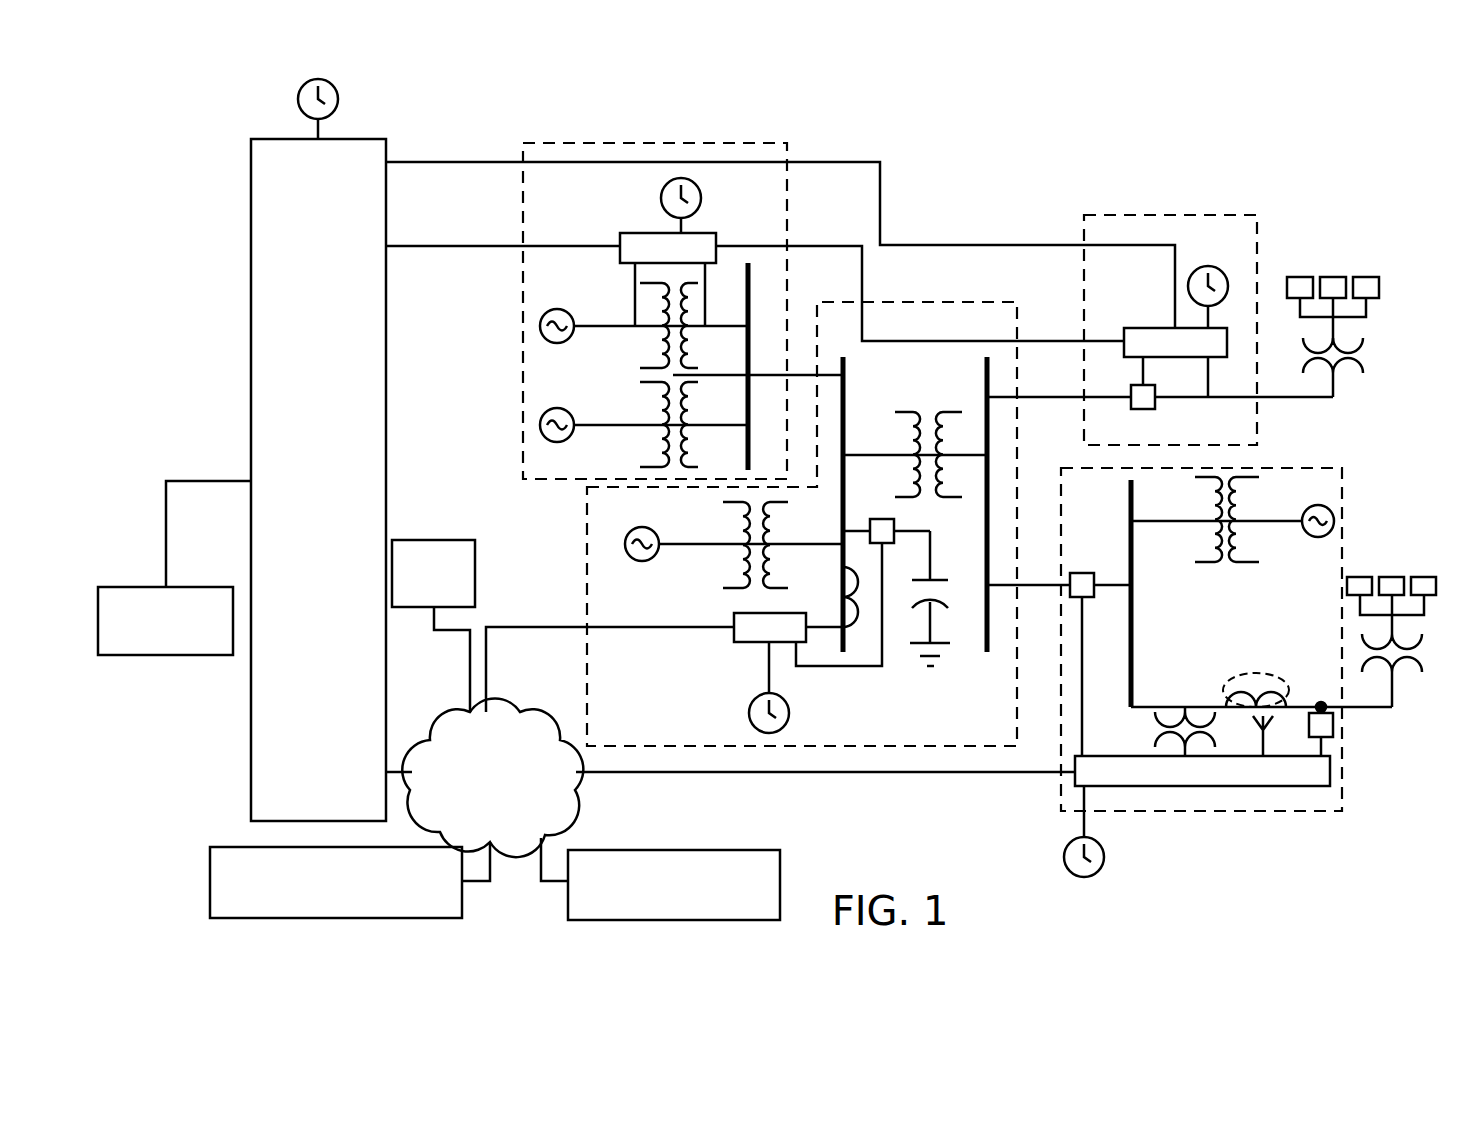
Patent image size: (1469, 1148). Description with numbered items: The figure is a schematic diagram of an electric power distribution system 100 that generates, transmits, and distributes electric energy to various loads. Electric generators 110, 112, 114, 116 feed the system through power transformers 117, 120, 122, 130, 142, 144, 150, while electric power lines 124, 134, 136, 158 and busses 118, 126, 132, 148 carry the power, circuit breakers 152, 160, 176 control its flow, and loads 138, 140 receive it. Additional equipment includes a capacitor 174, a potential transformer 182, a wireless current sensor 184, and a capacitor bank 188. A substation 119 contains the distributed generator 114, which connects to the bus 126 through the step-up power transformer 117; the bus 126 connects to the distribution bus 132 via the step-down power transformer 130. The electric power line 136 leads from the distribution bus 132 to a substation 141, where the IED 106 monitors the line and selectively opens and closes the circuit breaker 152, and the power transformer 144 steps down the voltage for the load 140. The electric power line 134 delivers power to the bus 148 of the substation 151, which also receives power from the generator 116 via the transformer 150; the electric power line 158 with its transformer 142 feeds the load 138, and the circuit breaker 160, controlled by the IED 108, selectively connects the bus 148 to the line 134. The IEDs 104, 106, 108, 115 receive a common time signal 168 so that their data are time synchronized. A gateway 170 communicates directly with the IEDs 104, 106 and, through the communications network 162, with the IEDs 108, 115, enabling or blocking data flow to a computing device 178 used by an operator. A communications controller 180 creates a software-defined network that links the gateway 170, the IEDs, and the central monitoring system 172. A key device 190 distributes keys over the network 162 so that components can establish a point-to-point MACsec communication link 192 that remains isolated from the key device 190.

The electric power distribution system 100 is at (1343, 131).
The IED 104 is at (661, 232).
The IED 106 is at (1138, 328).
The IED 108 is at (1255, 787).
The electric generator 110 is at (560, 309).
The electric generator 112 is at (560, 408).
The electric generator 114 is at (650, 527).
The IED 115 is at (775, 613).
The electric generator 116 is at (1311, 537).
The power transformer 117 is at (743, 575).
The bus 118 is at (751, 290).
The substation 119 is at (587, 575).
The power transformer 120 is at (660, 362).
The power transformer 122 is at (660, 458).
The electric power line 124 is at (802, 372).
The bus 126 is at (847, 383).
The power transformer 130 is at (928, 412).
The distribution bus 132 is at (985, 640).
The electric power line 134 is at (1027, 588).
The electric power line 136 is at (1108, 398).
The load 138 is at (1391, 576).
The load 140 is at (1368, 276).
The substation 141 is at (1108, 214).
The power transformer 142 is at (1408, 655).
The power transformer 144 is at (1362, 355).
The bus 148 is at (1129, 481).
The transformer 150 is at (1222, 476).
The substation 151 is at (1320, 811).
The circuit breaker 152 is at (1150, 409).
The electric power line 158 is at (1362, 708).
The circuit breaker 160 is at (1092, 574).
The communications network 162 is at (442, 718).
The common time signal 168 is at (339, 100).
The gateway 170 is at (387, 480).
The central monitoring system 172 is at (210, 880).
The capacitor 174 is at (945, 578).
The circuit breaker 176 is at (882, 519).
The computing device 178 is at (165, 656).
The communications controller 180 is at (672, 850).
The potential transformer 182 is at (1154, 730).
The wireless current sensor 184 is at (1250, 672).
The capacitor bank 188 is at (1334, 725).
The key device 190 is at (440, 540).
The MACsec communication link 192 is at (815, 246).